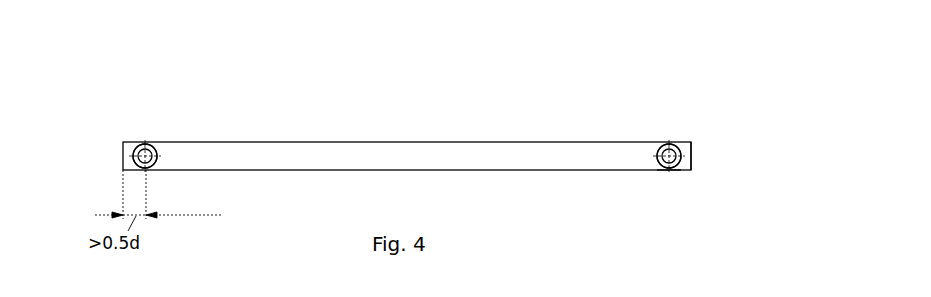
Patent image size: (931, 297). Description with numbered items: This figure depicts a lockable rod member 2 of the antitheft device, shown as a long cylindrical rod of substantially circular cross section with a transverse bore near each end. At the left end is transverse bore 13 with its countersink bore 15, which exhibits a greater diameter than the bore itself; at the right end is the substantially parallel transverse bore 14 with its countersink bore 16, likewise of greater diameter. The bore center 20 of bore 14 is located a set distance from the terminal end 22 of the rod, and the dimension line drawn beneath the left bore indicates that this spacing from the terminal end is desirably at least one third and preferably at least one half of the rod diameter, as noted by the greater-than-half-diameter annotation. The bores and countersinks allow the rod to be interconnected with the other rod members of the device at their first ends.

The lockable rod member 2 is at (513, 142).
The transverse bore 13 is at (147, 142).
The countersink bore 15 is at (158, 142).
The countersink bore 16 is at (678, 108).
The transverse bore 14 is at (680, 142).
The terminal end 22 is at (692, 143).
The bore center 20 is at (669, 170).